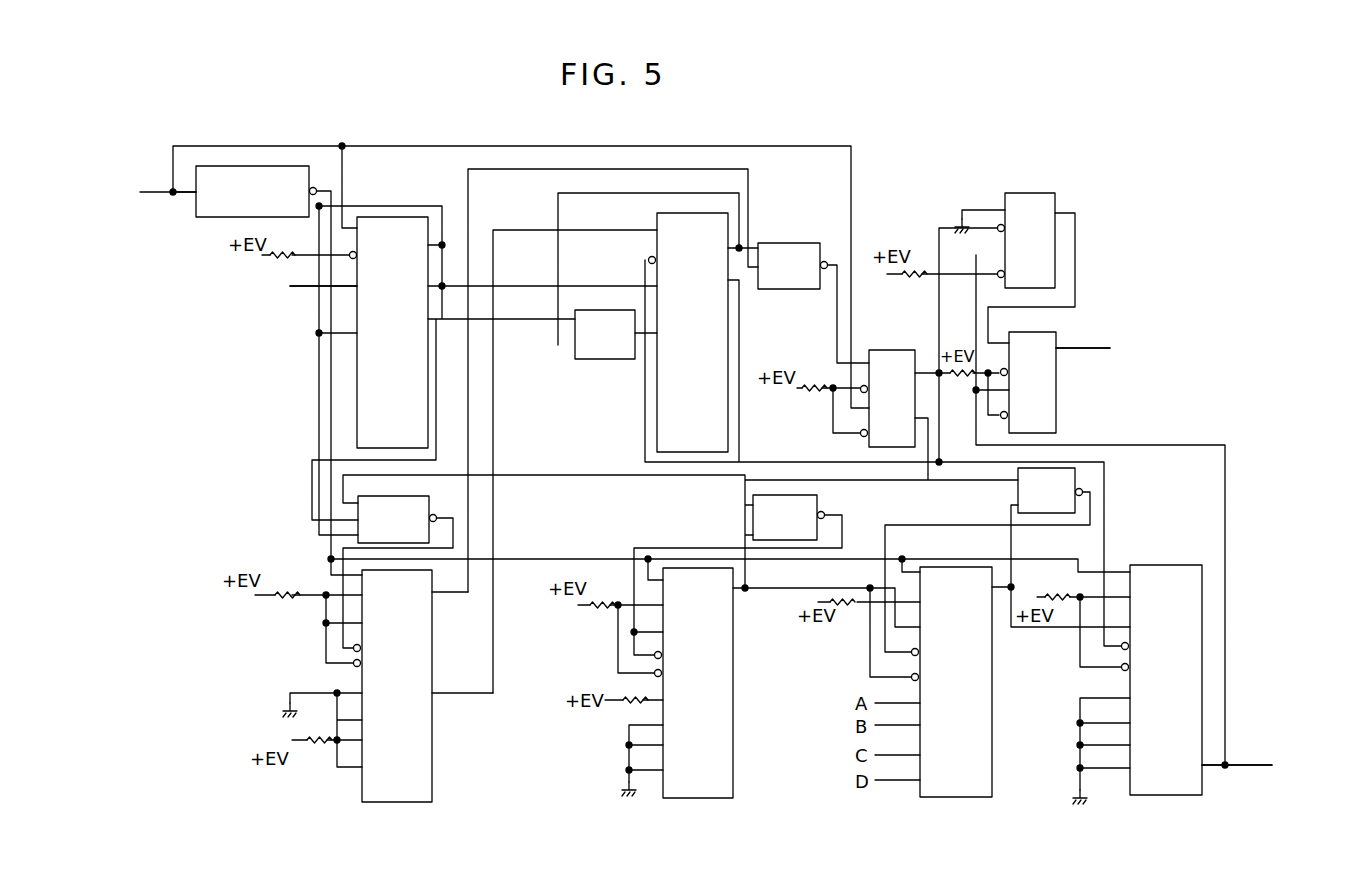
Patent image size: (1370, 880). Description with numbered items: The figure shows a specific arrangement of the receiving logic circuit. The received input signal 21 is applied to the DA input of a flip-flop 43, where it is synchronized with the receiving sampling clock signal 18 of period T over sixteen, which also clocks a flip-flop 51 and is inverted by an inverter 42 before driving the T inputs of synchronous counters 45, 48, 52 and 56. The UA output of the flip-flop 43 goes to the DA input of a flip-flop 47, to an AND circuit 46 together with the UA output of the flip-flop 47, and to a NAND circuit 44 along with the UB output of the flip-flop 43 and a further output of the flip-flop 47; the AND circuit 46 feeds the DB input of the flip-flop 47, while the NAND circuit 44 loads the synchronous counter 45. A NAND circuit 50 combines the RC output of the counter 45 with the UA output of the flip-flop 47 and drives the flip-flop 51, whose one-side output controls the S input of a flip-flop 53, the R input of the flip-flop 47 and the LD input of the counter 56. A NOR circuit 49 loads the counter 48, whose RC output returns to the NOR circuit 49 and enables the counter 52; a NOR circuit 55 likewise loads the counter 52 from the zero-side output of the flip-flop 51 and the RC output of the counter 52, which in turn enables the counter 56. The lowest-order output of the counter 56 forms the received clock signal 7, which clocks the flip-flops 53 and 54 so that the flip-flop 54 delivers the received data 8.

The received clock signal (RCVCLK) 7 is at (1236, 765).
The received data (RCVDATA) 8 is at (1082, 348).
The receiving sampling clock signal (SMPLCLK) 18 is at (185, 193).
The received input signal (RCVIN) 21 is at (307, 287).
The inverter 42 is at (305, 166).
The flip-flop 43 is at (357, 423).
The NAND circuit 44 is at (437, 507).
The synchronous counter 45 is at (433, 754).
The AND circuit 46 is at (596, 359).
The flip-flop 47 is at (730, 333).
The synchronous counter 48 is at (735, 756).
The NOR circuit 49 is at (752, 522).
The NAND circuit 50 is at (790, 243).
The flip-flop 51 is at (904, 354).
The synchronous counter 52 is at (993, 768).
The flip-flop 53 is at (1030, 193).
The flip-flop 54 is at (1058, 428).
The NOR circuit 55 is at (1016, 482).
The synchronous counter 56 is at (1157, 565).